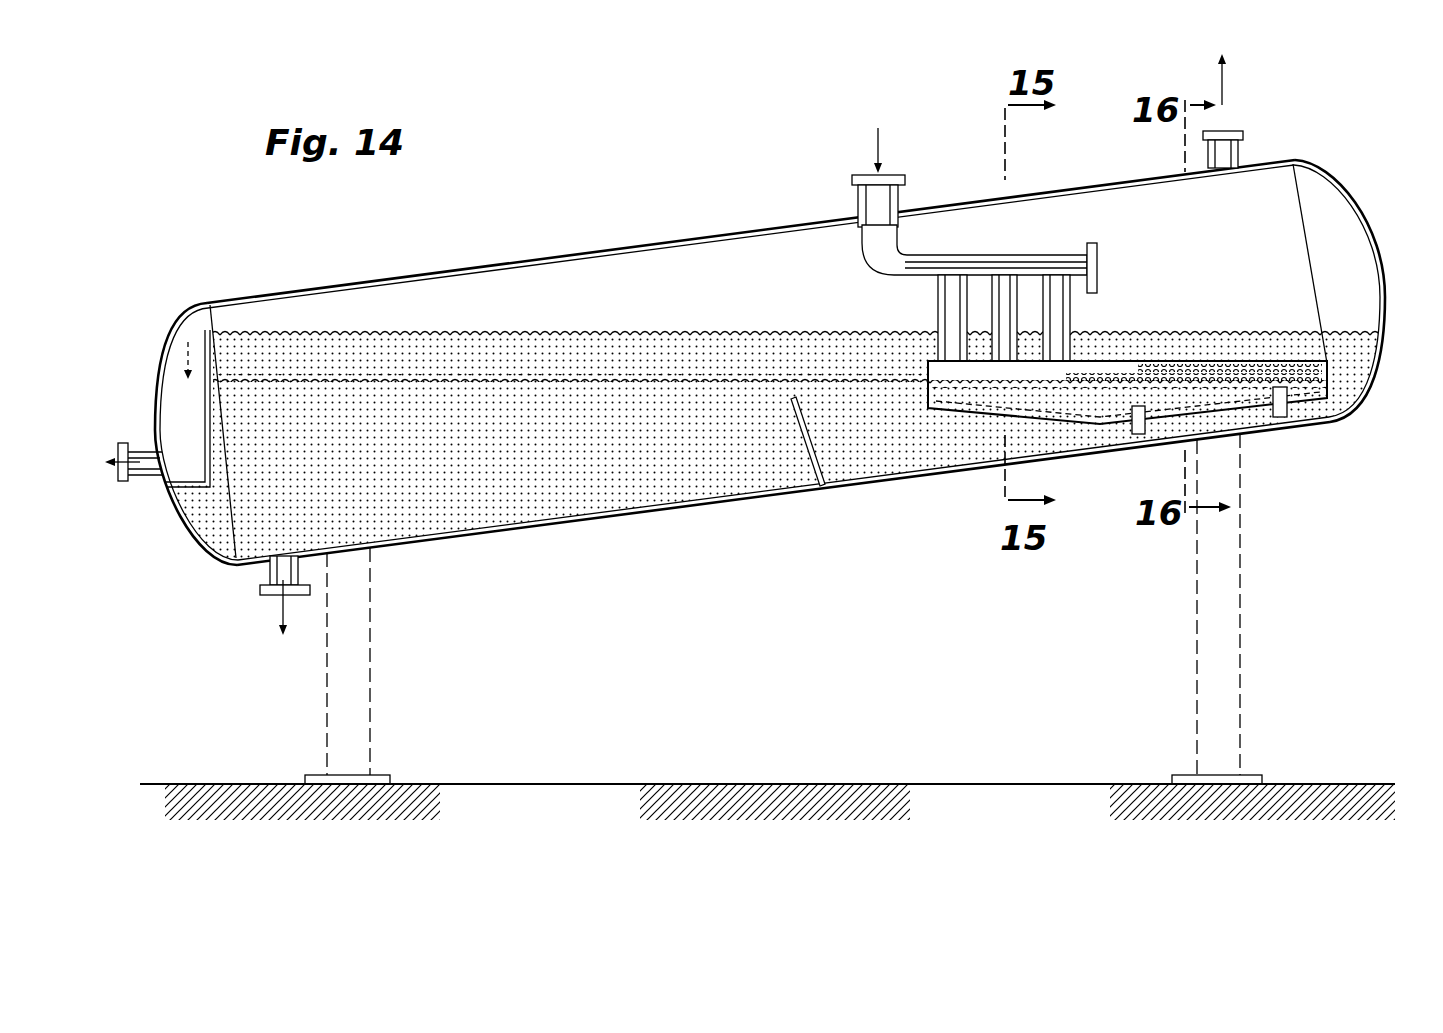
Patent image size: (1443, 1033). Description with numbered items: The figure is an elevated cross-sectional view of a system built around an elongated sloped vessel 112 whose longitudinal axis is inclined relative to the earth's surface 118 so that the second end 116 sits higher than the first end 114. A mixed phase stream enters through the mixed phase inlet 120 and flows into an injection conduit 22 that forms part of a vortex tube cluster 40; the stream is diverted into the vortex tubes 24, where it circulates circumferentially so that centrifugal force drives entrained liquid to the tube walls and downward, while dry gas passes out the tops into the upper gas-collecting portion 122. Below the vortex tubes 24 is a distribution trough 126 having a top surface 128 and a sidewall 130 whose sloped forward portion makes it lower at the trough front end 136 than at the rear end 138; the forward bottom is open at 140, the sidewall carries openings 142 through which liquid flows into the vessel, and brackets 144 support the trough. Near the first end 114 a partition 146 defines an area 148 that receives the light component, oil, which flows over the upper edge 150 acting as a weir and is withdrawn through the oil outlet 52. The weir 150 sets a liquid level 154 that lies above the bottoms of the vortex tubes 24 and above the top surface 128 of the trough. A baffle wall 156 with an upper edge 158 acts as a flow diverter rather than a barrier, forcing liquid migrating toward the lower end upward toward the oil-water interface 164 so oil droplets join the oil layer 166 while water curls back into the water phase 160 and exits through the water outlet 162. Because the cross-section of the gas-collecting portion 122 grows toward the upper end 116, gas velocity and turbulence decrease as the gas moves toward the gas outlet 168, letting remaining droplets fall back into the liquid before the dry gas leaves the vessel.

The injection conduit 22 is at (918, 262).
The vortex tubes 24 is at (1005, 277).
The vortex tube cluster 40 is at (1068, 246).
The oil outlet 52 is at (140, 453).
The elongated sloped vessel 112 is at (630, 245).
The first end 114 is at (157, 390).
The second end 116 is at (1386, 282).
The earth's surface 118 is at (862, 783).
The mixed phase inlet 120 is at (855, 178).
The gas-collecting portion 122 is at (1272, 222).
The distribution trough 126 is at (1256, 351).
The top surface 128 is at (1212, 362).
The sidewall 130 is at (1032, 397).
The trough front end 136 is at (1333, 378).
The rear end 138 is at (923, 386).
The open forward bottom 140 is at (1252, 425).
The openings 142 is at (1185, 369).
The brackets 144 is at (1138, 425).
The partition 146 is at (224, 405).
The area 148 is at (202, 427).
The upper edge (weir) 150 is at (207, 328).
The liquid level 154 is at (702, 335).
The baffle wall 156 is at (800, 427).
The upper edge 158 is at (793, 397).
The water phase 160 is at (437, 452).
The water outlet 162 is at (262, 590).
The oil-water interface 164 is at (552, 380).
The oil layer 166 is at (437, 372).
The gas outlet 168 is at (1240, 135).